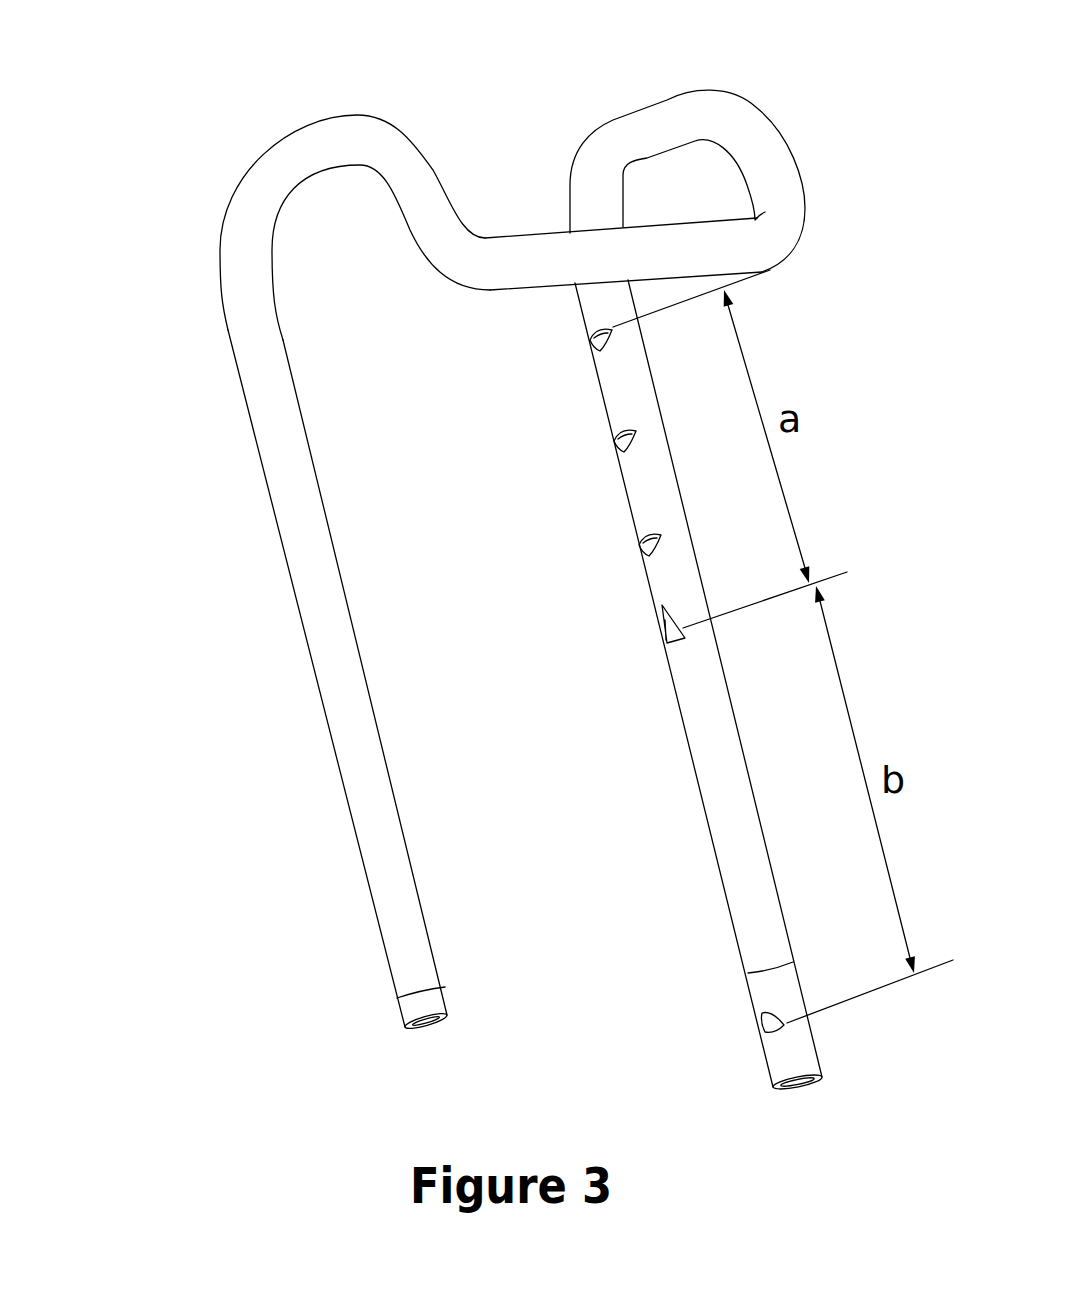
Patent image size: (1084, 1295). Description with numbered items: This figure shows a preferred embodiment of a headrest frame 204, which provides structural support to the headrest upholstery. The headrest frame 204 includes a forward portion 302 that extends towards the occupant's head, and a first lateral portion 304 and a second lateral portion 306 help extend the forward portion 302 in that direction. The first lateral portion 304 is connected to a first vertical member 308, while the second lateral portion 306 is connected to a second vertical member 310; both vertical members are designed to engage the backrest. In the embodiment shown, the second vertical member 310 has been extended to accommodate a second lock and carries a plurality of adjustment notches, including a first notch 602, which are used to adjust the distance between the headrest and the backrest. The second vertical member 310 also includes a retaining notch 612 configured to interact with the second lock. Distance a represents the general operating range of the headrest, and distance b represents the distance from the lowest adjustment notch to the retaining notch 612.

The headrest frame 204 is at (137, 88).
The forward portion 302 is at (547, 272).
The first lateral portion 304 is at (310, 145).
The second lateral portion 306 is at (663, 113).
The first vertical member 308 is at (302, 602).
The second vertical member 310 is at (717, 792).
The first notch 602 is at (592, 350).
The retaining notch 612 is at (767, 1025).